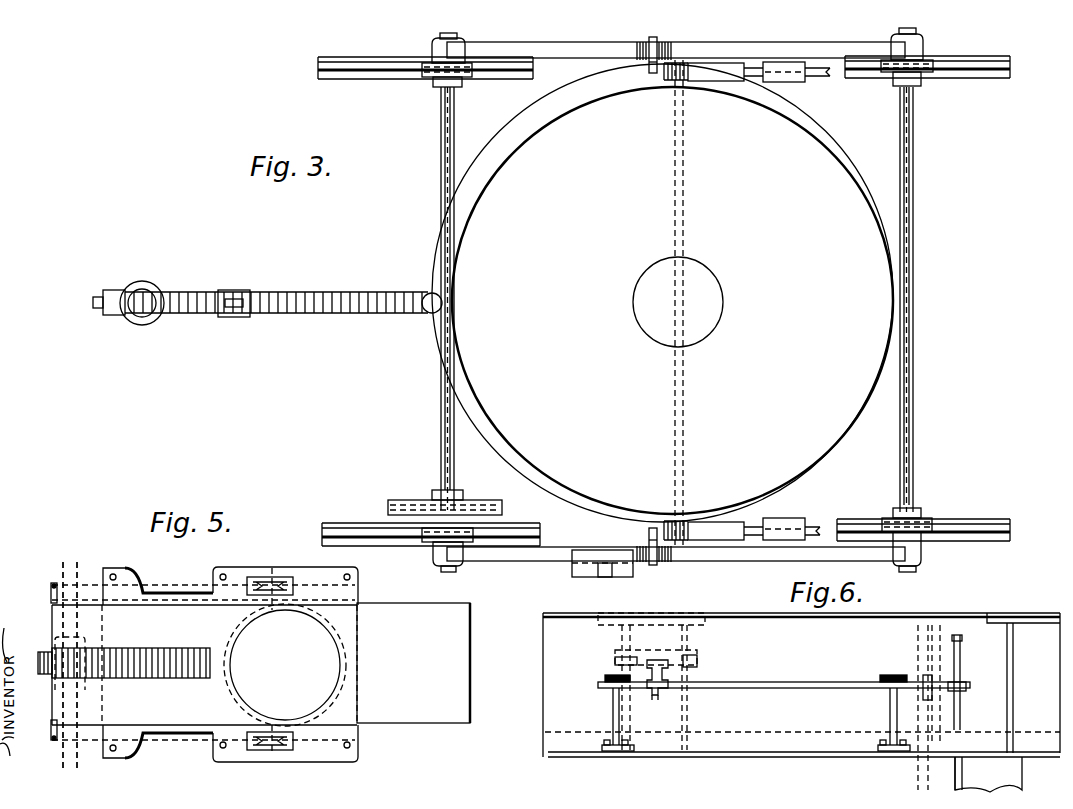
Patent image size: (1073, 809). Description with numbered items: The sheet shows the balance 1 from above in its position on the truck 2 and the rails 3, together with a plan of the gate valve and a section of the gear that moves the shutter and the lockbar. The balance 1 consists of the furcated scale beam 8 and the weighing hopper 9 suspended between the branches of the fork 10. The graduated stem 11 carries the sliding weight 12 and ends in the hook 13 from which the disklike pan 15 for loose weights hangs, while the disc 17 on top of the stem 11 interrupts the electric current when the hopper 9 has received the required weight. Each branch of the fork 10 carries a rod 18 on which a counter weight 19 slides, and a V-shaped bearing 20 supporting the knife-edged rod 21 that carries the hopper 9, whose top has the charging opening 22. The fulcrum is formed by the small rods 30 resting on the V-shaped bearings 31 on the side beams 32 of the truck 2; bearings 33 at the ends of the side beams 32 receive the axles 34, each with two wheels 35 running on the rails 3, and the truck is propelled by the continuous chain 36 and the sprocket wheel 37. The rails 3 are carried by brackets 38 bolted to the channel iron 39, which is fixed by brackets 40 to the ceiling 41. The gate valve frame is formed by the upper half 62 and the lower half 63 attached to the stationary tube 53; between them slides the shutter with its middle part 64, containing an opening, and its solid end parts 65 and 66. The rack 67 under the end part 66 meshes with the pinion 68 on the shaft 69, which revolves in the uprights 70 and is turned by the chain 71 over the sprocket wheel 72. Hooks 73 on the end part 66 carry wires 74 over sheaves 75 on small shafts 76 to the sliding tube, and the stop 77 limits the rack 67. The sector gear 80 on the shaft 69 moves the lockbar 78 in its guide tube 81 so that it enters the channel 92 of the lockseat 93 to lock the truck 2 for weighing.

In FIG. 3, the balance 1 is at (943, 240).
In FIG. 3, the truck 2 is at (575, 24).
In FIG. 3, the rails 3 is at (354, 56).
In FIG. 3, the furcated scale beam 8 is at (409, 256).
In FIG. 3, the weighing hopper 9 is at (672, 300).
In FIG. 3, the fork 10 is at (568, 100).
In FIG. 3, the stem 11 is at (290, 282).
In FIG. 3, the sliding weight 12 is at (224, 317).
In FIG. 3, the hook 13 is at (112, 315).
In FIG. 3, the disklike pan 15 is at (138, 322).
In FIG. 3, the disc 17 is at (424, 312).
In FIG. 3, the rod 18 is at (826, 76).
In FIG. 3, the counter weight 19 is at (783, 82).
In FIG. 3, the V-shaped bearing 20 is at (688, 76).
In FIG. 3, the rod 21 is at (685, 420).
In FIG. 3, the opening 22 is at (678, 302).
In FIG. 3, the small rods 30 is at (653, 37).
In FIG. 3, the V-shaped bearings 31 is at (672, 42).
In FIG. 3, the side beams 32 is at (755, 42).
In FIG. 3, the bearings 33 is at (434, 40).
In FIG. 3, the axles 34 is at (438, 118).
In FIG. 3, the wheels 35 is at (920, 60).
In FIG. 3, the continuous chain 36 is at (398, 508).
In FIG. 3, the sprocket wheel 37 is at (408, 500).
In FIG. 6, the brackets 38 is at (1022, 781).
In FIG. 6, the channel iron 39 is at (793, 757).
In FIG. 6, the brackets 40 is at (1013, 672).
In FIG. 6, the ceiling 41 is at (822, 613).
In FIG. 5, the stationary tube 53 is at (272, 600).
In FIG. 6, the stationary tube 53 is at (680, 625).
In FIG. 5, the upper half 62 is at (125, 568).
In FIG. 6, the upper half 62 is at (622, 652).
In FIG. 6, the lower half 63 is at (615, 662).
In FIG. 5, the middle part 64 is at (285, 665).
In FIG. 5, the end part 65 is at (413, 663).
In FIG. 5, the end part 66 is at (52, 616).
In FIG. 6, the end part 66 is at (690, 660).
In FIG. 5, the rack 67 is at (165, 648).
In FIG. 6, the rack 67 is at (670, 668).
In FIG. 5, the pinion 68 is at (42, 652).
In FIG. 6, the pinion 68 is at (660, 695).
In FIG. 5, the shaft 69 is at (62, 765).
In FIG. 6, the shaft 69 is at (796, 682).
In FIG. 6, the uprights 70 is at (607, 703).
In FIG. 6, the chain 71 is at (955, 779).
In FIG. 6, the sprocket wheel 72 is at (960, 652).
In FIG. 5, the hooks 73 is at (53, 585).
In FIG. 5, the wires 74 is at (86, 585).
In FIG. 5, the sheaves 75 is at (260, 752).
In FIG. 5, the small shafts 76 is at (272, 752).
In FIG. 5, the stop 77 is at (205, 688).
In FIG. 6, the lockbar 78 is at (918, 782).
In FIG. 6, the sector gear 80 is at (920, 668).
In FIG. 6, the guide tube 81 is at (935, 662).
In FIG. 3, the channel 92 is at (601, 577).
In FIG. 3, the lockseat 93 is at (572, 573).